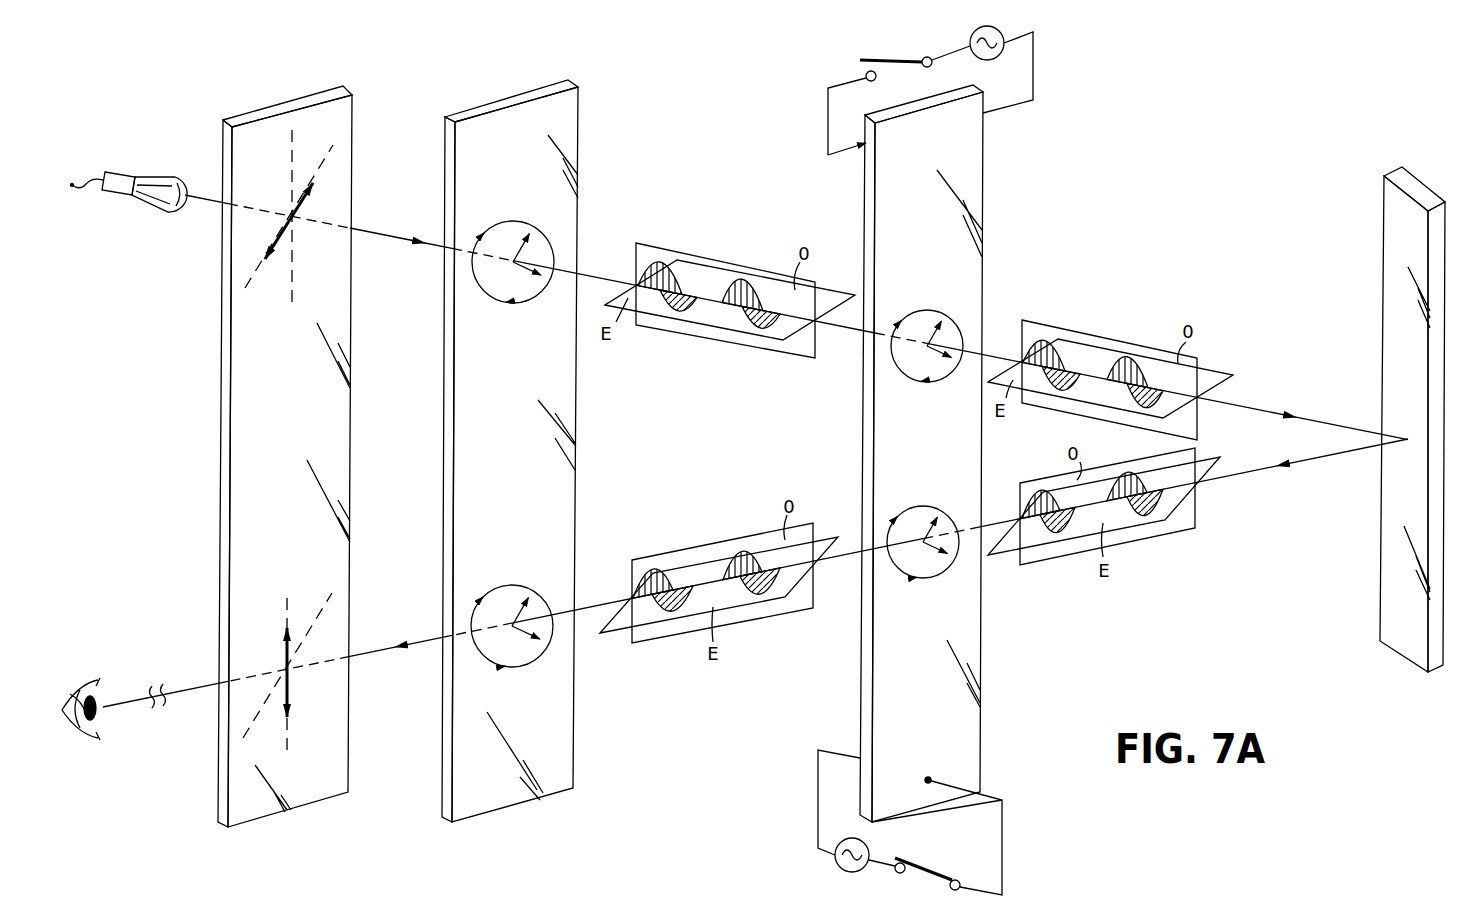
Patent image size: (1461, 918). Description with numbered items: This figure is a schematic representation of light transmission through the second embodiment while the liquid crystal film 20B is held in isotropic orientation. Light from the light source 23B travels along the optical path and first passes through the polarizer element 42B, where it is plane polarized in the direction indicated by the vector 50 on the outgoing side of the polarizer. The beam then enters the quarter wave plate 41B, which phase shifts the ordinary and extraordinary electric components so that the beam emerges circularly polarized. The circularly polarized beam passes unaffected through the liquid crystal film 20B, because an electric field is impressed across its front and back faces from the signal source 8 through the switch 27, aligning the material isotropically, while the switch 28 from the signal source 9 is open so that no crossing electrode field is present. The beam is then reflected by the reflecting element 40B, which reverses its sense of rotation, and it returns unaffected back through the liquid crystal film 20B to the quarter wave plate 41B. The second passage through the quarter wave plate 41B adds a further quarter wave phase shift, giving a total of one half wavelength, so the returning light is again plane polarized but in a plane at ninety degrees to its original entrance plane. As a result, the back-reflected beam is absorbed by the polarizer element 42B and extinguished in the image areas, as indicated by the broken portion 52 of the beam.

The light source 23B is at (128, 177).
The vector 50 is at (278, 237).
The polarizer element 42B is at (332, 425).
The quarter wave plate 41B is at (547, 498).
The liquid crystal film 20B is at (977, 197).
The reflecting element 40B is at (1395, 239).
The broken portion of the beam 52 is at (152, 686).
The switch 28 is at (878, 58).
The signal source 9 is at (970, 38).
The signal source 8 is at (835, 862).
The switch 27 is at (918, 870).